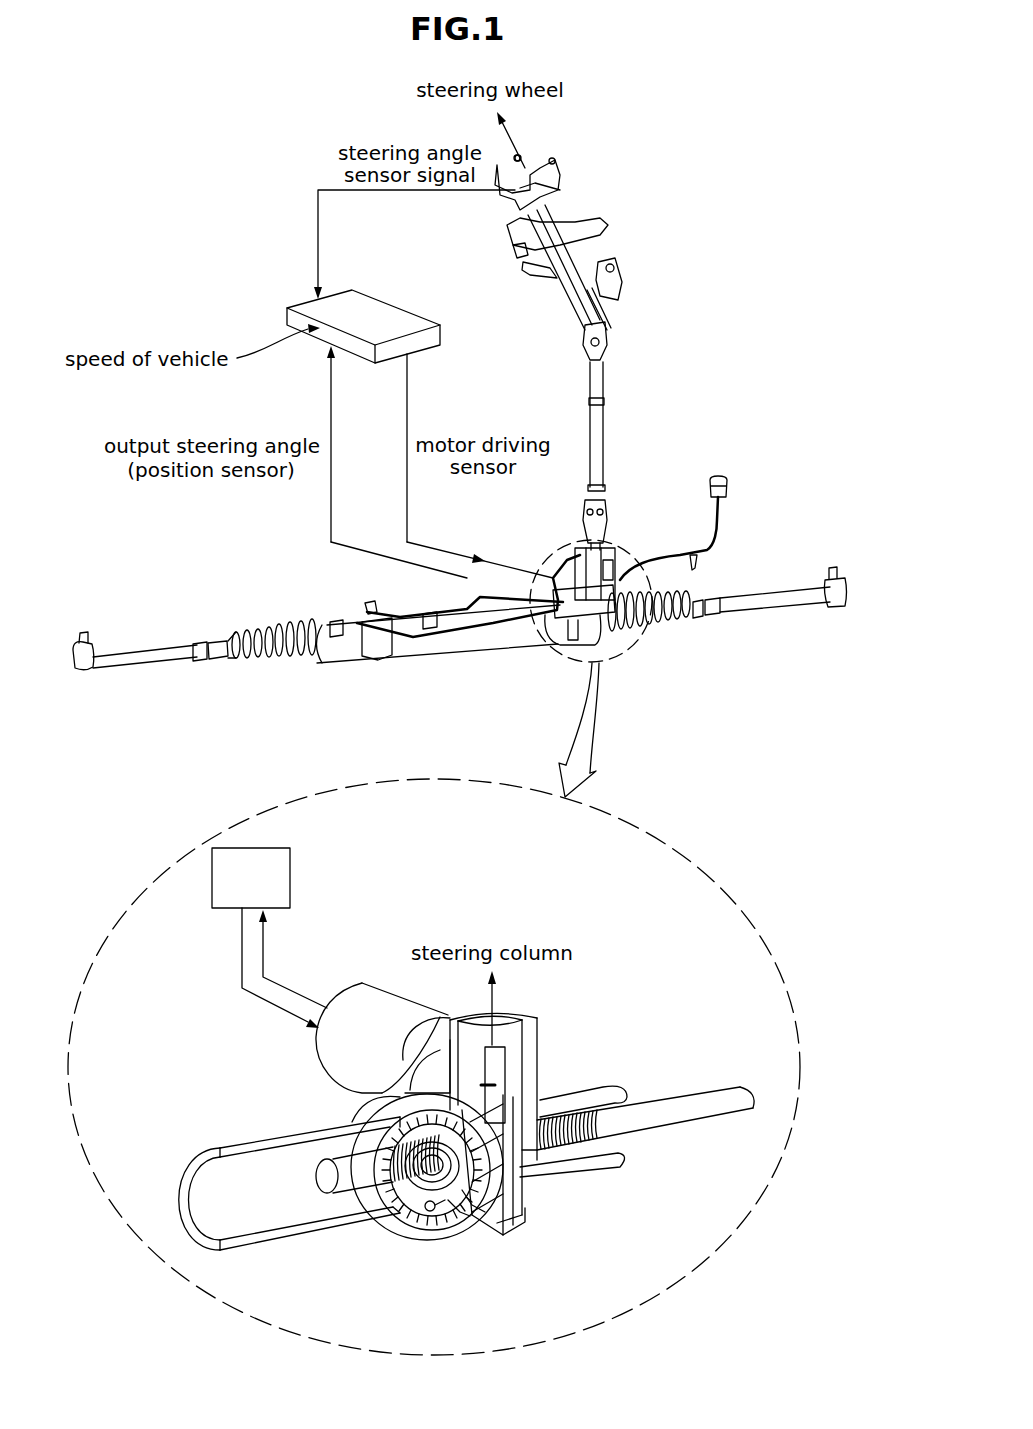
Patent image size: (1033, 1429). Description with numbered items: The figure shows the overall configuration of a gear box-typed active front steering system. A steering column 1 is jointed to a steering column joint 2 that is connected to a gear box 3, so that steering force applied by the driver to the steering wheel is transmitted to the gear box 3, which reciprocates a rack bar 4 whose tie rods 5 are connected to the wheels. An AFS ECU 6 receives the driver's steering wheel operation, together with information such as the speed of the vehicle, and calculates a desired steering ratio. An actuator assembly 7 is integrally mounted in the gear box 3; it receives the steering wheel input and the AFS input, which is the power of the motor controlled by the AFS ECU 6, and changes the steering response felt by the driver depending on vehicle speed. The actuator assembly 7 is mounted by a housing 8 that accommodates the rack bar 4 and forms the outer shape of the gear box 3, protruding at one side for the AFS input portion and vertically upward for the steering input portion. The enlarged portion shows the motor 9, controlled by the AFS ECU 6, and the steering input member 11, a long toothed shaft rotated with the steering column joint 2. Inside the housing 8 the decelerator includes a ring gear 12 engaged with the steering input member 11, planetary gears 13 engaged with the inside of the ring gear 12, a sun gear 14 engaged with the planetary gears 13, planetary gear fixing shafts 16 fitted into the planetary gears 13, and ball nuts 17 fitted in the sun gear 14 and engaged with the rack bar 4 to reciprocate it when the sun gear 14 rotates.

The steering column 1 is at (585, 258).
The steering column joint 2 is at (600, 437).
The gear box 3 is at (600, 652).
The rack bar 4 is at (722, 1113).
The tie rods 5 is at (120, 660).
The AFS ECU 6 is at (383, 308).
The actuator assembly 7 is at (447, 903).
The housing 8 is at (532, 1036).
The motor 9 is at (378, 1005).
The steering input member 11 is at (500, 1178).
The ring gear 12 is at (470, 1203).
The planetary gears 13 is at (453, 1213).
The sun gear 14 is at (417, 1213).
The planetary gear fixing shafts 16 is at (433, 1218).
The ball nuts 17 is at (350, 1126).